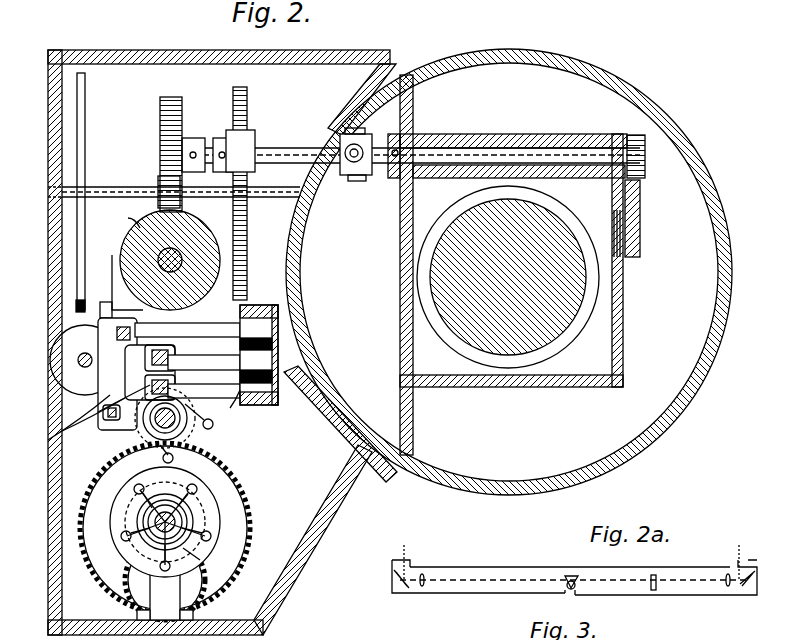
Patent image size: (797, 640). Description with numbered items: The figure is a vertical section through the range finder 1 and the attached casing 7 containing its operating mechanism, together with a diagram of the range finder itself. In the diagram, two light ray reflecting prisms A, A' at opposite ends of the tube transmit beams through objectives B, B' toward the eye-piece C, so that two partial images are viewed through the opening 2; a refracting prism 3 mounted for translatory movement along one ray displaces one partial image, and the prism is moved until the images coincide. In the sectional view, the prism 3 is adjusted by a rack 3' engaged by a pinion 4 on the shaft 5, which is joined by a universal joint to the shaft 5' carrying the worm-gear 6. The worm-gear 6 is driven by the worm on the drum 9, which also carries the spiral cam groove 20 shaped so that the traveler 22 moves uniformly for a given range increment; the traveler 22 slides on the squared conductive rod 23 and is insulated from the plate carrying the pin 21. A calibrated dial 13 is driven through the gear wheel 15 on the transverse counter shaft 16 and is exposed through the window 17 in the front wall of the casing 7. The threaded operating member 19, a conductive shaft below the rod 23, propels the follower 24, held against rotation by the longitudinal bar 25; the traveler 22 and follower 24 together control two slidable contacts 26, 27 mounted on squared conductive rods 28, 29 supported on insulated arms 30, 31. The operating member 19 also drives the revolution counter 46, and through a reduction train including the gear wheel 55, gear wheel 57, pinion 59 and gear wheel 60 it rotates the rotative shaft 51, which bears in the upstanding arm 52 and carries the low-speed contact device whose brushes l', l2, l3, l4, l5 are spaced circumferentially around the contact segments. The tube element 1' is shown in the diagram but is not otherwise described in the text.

In FIG. 2, the range finder 1 is at (509, 272).
In FIG. 2, the refracting prism 3 is at (508, 277).
In FIG. 2A, the refracting prism 3 is at (662, 596).
In FIG. 2, the rack 3' is at (532, 265).
In FIG. 2, the pinion 4 is at (645, 160).
In FIG. 2, the shaft 5 is at (369, 165).
In FIG. 2, the shaft 5' is at (411, 134).
In FIG. 2, the worm-gear 6 is at (158, 110).
In FIG. 2, the casing 7 is at (116, 52).
In FIG. 2, the drum 9 is at (198, 242).
In FIG. 2, the calibrated dial 13 is at (86, 150).
In FIG. 2, the gear wheel 15 is at (246, 242).
In FIG. 2, the transverse counter shaft 16 is at (140, 188).
In FIG. 2, the window 17 is at (54, 176).
In FIG. 2, the operating member 19 is at (153, 420).
In FIG. 2, the cam groove 20 is at (120, 213).
In FIG. 2, the pin 21 is at (113, 254).
In FIG. 2, the traveler 22 is at (100, 304).
In FIG. 2, the squared rod 23 is at (116, 333).
In FIG. 2, the follower 24 is at (230, 344).
In FIG. 2, the longitudinal bar 25 is at (92, 431).
In FIG. 2, the slidable contact 26 is at (176, 356).
In FIG. 2, the slidable contact 27 is at (180, 388).
In FIG. 2, the squared conductive rod 28 is at (170, 348).
In FIG. 2, the squared conductive rod 29 is at (108, 400).
In FIG. 2, the insulated arm 30 is at (244, 314).
In FIG. 2, the insulated arm 31 is at (240, 404).
In FIG. 2, the revolution counter 46 is at (68, 364).
In FIG. 2, the rotative shaft 51 is at (200, 508).
In FIG. 2, the upstanding arm 52 is at (140, 608).
In FIG. 2, the gear wheel 55 is at (246, 508).
In FIG. 2, the gear wheel 57 is at (138, 582).
In FIG. 2, the pinion 59 is at (200, 562).
In FIG. 2, the gear wheel 60 is at (128, 522).
In FIG. 2, the brush l' is at (179, 491).
In FIG. 2, the brush l2 is at (210, 522).
In FIG. 2, the brush l3 is at (190, 540).
In FIG. 2, the brush l4 is at (132, 545).
In FIG. 2, the brush l5 is at (134, 494).
In FIG. 2A, the light ray reflecting prism A is at (392, 580).
In FIG. 2A, the objective B is at (423, 594).
In FIG. 2A, the eye-piece C is at (571, 574).
In FIG. 2A, the opening 2 is at (569, 595).
In FIG. 2A, the tube 1' is at (635, 603).
In FIG. 2A, the objective B' is at (721, 595).
In FIG. 2A, the light ray reflecting prism A' is at (752, 581).